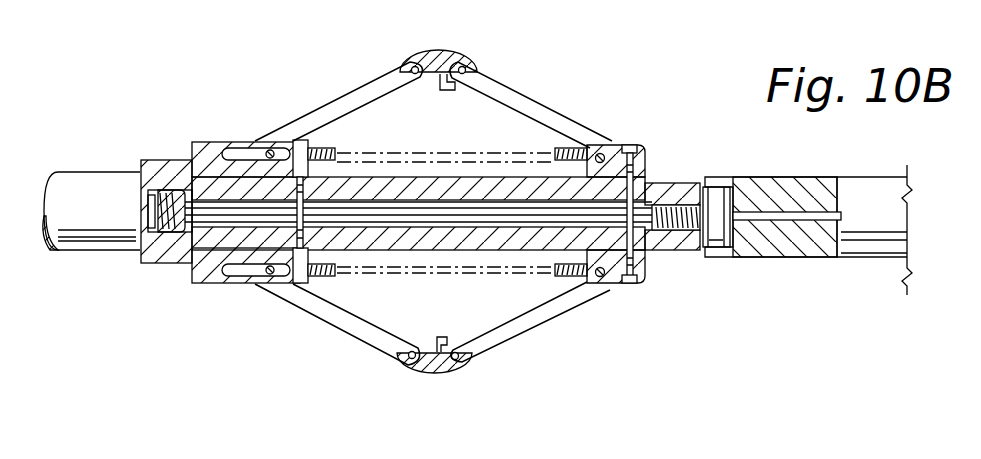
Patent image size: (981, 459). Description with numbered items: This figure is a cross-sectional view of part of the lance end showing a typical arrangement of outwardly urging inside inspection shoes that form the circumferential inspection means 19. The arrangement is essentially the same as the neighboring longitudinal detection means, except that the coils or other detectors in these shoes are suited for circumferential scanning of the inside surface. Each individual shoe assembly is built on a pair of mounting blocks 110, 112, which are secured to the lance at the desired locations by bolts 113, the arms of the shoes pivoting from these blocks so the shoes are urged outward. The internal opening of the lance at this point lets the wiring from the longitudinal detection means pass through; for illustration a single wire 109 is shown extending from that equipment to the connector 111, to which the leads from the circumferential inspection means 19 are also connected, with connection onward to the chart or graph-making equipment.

The circumferential inspection means 19 is at (538, 84).
The wire 109 is at (653, 182).
The mounting block 110 is at (203, 147).
The connector 111 is at (168, 192).
The mounting block 112 is at (650, 172).
The bolt 113 is at (629, 145).